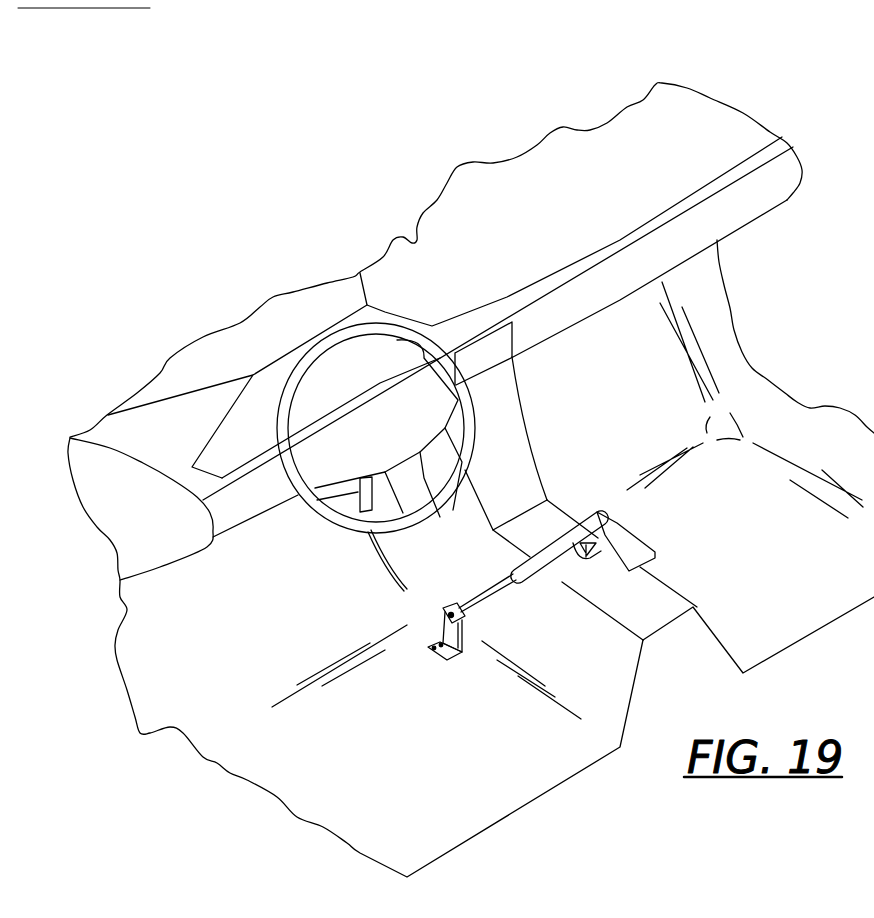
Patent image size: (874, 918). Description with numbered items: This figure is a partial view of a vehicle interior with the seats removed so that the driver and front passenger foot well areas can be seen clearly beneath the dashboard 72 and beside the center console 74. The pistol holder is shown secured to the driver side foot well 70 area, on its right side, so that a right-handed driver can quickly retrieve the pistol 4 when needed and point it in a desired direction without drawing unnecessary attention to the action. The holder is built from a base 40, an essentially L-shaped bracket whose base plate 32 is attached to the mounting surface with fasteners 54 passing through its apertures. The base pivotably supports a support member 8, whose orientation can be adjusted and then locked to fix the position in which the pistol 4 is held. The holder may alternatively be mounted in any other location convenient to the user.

The pistol 4 is at (625, 533).
The support member 8 is at (497, 583).
The base plate 32 is at (443, 640).
The base 40 is at (448, 607).
The fastener 54 is at (430, 652).
The driver side foot well of vehicle 70 is at (238, 767).
The dashboard 72 is at (520, 268).
The center console 74 is at (660, 619).